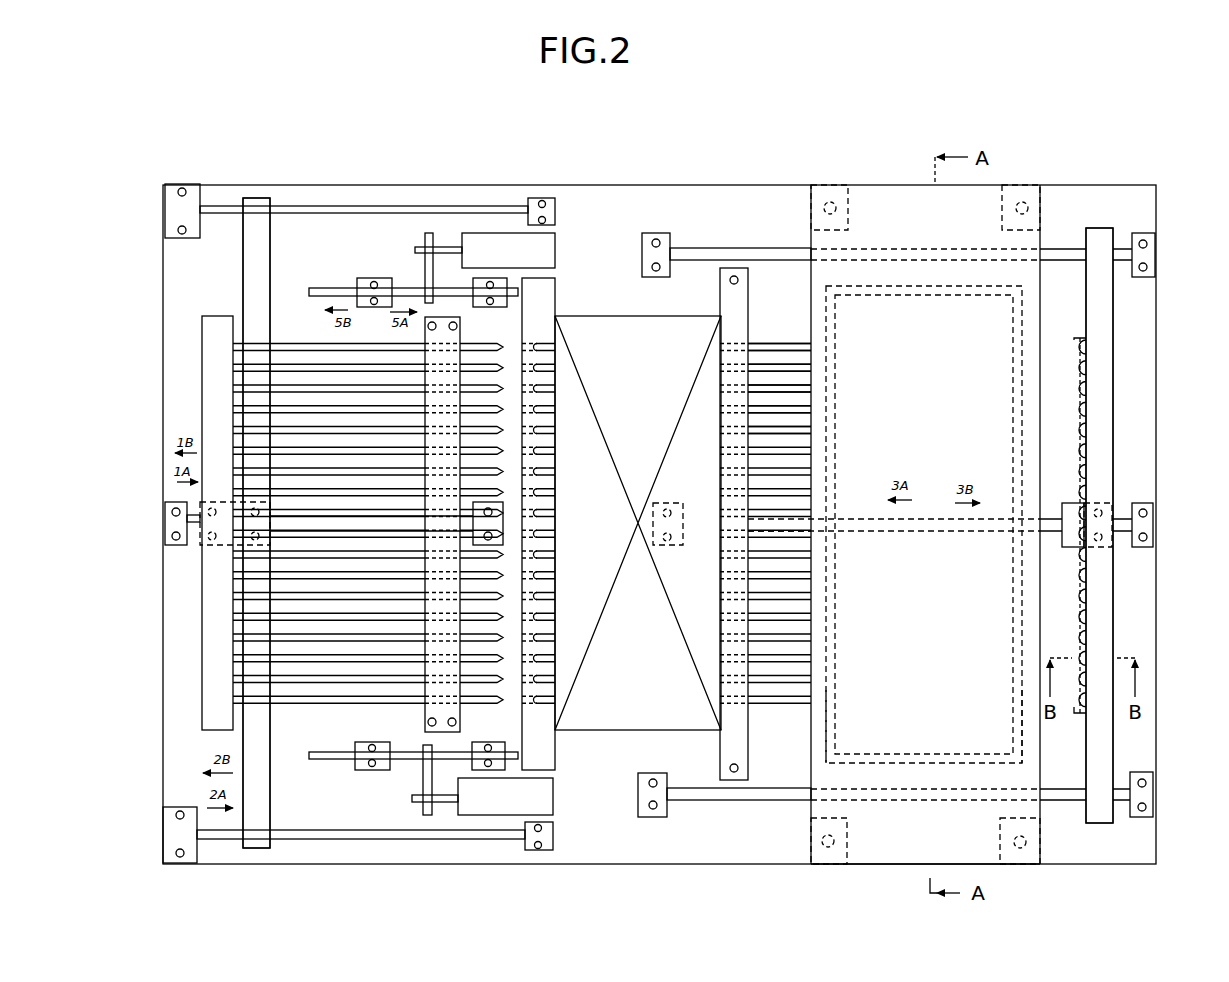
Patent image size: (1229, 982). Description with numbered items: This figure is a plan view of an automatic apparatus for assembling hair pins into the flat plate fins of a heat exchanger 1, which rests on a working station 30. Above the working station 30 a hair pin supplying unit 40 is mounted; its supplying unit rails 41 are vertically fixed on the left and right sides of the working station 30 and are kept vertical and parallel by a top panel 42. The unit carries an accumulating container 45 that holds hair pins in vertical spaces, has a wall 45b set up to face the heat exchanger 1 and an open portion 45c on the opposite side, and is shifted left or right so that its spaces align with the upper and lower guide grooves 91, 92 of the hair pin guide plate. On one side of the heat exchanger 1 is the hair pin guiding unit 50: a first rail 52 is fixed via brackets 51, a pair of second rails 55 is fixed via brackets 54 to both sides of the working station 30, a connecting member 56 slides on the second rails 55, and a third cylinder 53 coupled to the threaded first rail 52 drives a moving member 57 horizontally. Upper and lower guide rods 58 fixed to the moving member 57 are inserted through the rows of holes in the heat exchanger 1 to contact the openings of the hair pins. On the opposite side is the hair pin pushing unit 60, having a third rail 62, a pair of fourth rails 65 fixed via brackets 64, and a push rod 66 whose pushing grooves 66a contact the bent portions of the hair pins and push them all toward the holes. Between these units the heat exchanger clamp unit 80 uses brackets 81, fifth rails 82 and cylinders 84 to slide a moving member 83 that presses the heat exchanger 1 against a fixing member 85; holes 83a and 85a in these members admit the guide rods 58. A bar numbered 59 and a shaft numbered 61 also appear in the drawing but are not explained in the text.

The heat exchanger 1 is at (618, 312).
The working station 30 is at (159, 245).
The hair pin supplying unit 40 is at (986, 204).
The supplying unit rails 41 is at (836, 210).
The top panel 42 is at (922, 847).
The accumulating container 45 is at (913, 285).
The wall 45b is at (833, 722).
The open portion 45c is at (1023, 742).
The hair pin guiding unit 50 is at (279, 334).
The brackets 51 is at (165, 522).
The first rail 52 is at (193, 513).
The third cylinder 53 is at (240, 527).
The brackets 54 is at (178, 188).
The second rails 55 is at (226, 206).
The connecting member 56 is at (260, 198).
The moving member 57 is at (212, 442).
The guide rods 58 is at (302, 368).
The guide plate 59 is at (440, 322).
The hair pin pushing unit 60 is at (1096, 221).
The drive shaft 61 is at (667, 548).
The third rail 62 is at (783, 535).
The brackets 64 is at (663, 233).
The fourth rails 65 is at (692, 248).
The push rod 66 is at (1105, 610).
The pushing grooves 66a is at (1087, 357).
The heat exchanger clamp unit 80 is at (437, 238).
The brackets 81 is at (368, 278).
The fifth rails 82 is at (322, 288).
The moving member 83 is at (556, 285).
The holes 83a is at (541, 345).
The cylinders 84 is at (496, 233).
The fixing member 85 is at (748, 265).
The holes 85a is at (737, 343).
The guide groove 91 is at (781, 357).
The guide groove 92 is at (779, 420).